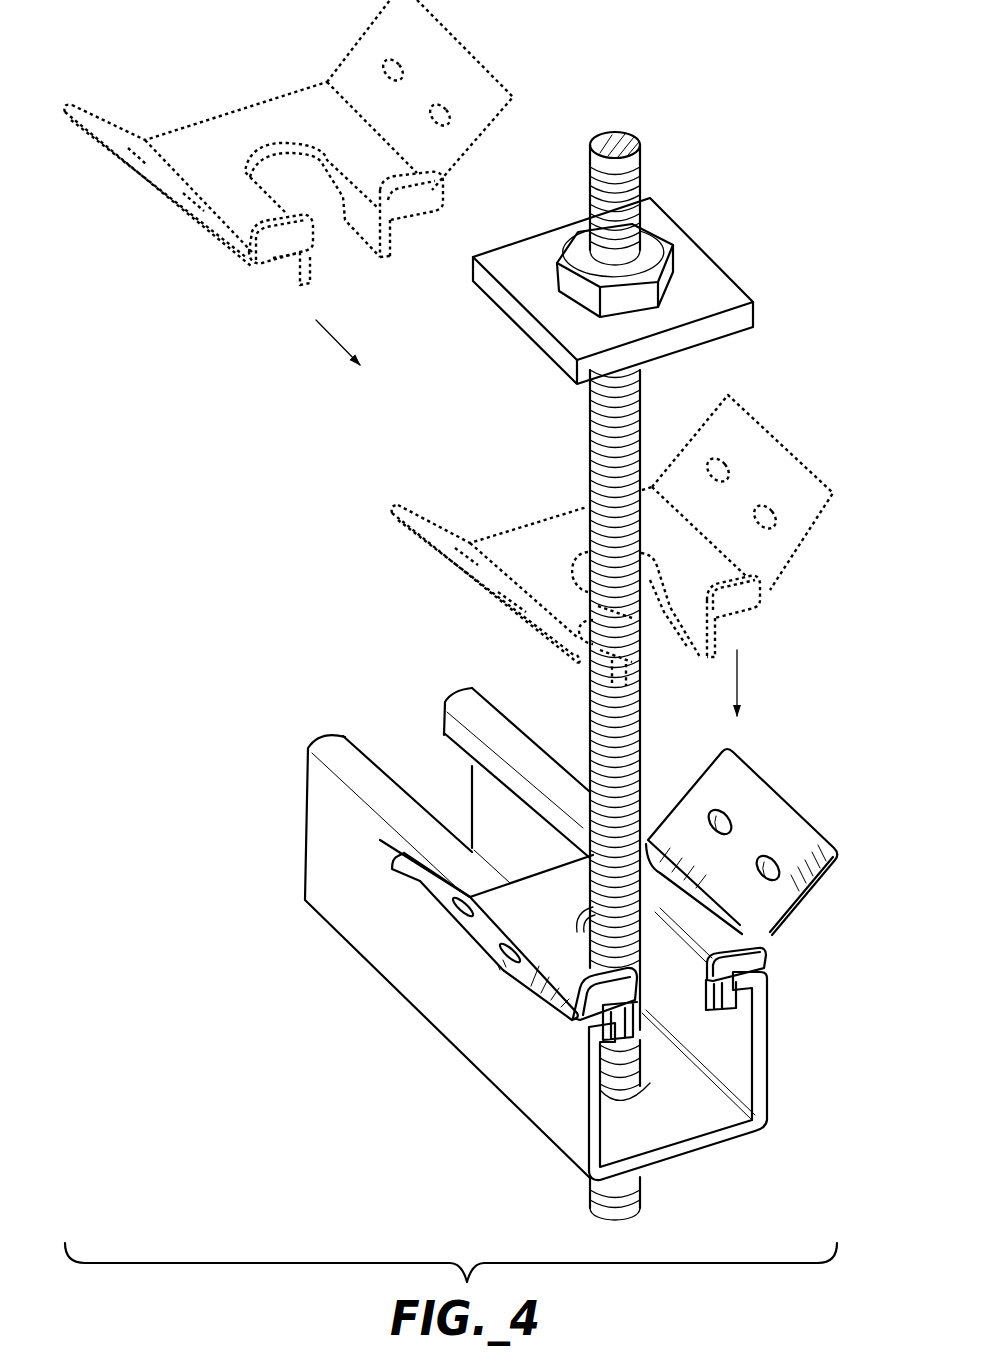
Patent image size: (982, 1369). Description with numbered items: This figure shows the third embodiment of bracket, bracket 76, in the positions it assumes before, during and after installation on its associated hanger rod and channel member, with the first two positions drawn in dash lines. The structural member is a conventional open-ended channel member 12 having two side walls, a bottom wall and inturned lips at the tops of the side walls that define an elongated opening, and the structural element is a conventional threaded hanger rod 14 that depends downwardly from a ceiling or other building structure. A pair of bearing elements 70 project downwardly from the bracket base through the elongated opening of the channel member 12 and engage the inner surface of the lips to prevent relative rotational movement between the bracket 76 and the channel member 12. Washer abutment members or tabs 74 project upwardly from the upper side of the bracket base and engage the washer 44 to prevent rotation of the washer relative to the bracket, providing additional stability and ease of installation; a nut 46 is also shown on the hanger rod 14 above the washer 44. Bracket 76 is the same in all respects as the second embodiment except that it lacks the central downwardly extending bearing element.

The open-ended channel member 12 is at (370, 973).
The threaded hanger rod 14 is at (586, 704).
The washer 44 is at (718, 290).
The nut 46 is at (653, 247).
The bearing elements 70 is at (306, 285).
The washer abutment members or tabs 74 is at (274, 257).
The bracket 76 is at (212, 245).